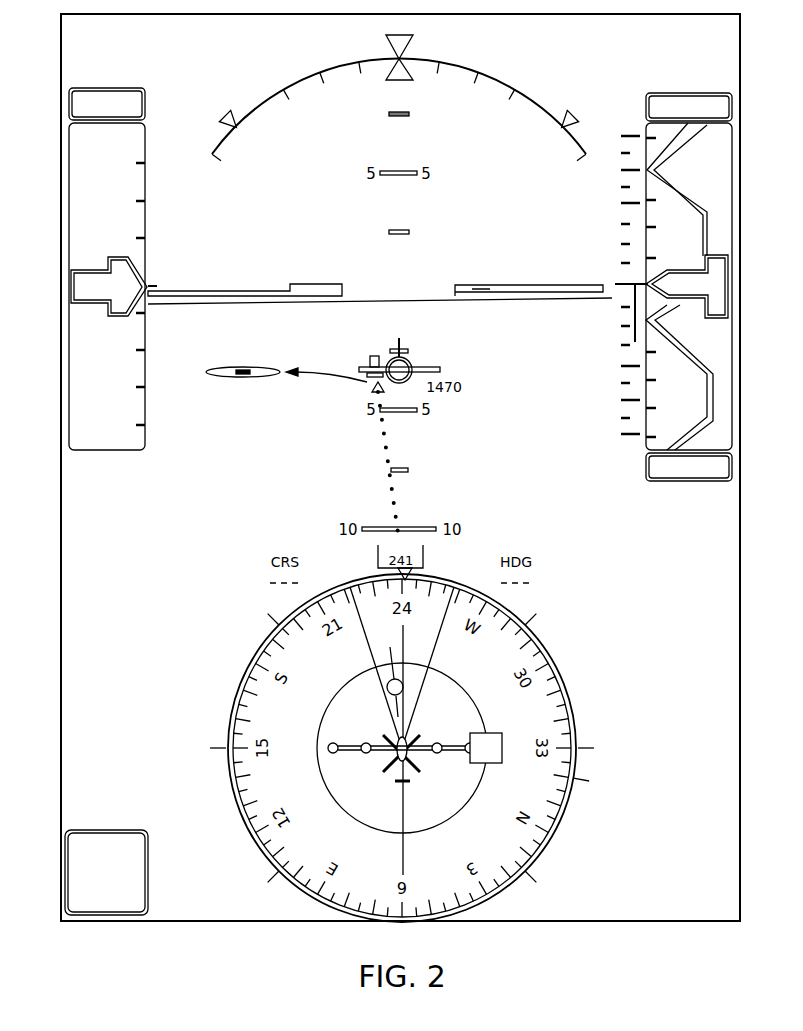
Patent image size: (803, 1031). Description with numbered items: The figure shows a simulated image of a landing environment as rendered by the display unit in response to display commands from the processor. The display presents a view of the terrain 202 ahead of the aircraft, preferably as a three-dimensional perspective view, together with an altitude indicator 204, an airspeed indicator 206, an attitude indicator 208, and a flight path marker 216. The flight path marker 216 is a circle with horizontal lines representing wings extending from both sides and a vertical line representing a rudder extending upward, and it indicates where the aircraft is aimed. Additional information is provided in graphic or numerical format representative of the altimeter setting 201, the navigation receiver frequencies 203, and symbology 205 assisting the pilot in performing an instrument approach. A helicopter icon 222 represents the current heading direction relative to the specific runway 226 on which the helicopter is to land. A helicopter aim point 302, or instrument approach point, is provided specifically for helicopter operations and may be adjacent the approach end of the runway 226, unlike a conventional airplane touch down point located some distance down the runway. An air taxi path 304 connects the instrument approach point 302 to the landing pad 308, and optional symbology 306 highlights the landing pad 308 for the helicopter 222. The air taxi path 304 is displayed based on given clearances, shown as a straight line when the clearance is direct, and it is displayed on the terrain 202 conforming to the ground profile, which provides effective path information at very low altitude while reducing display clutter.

The altimeter setting 201 is at (646, 468).
The terrain 202 is at (377, 303).
The navigation receiver frequencies 203 is at (148, 843).
The altitude indicator 204 is at (624, 206).
The symbology 205 is at (384, 461).
The airspeed indicator 206 is at (150, 214).
The attitude indicator 208 is at (530, 112).
The flight path marker 216 is at (447, 342).
The helicopter icon 222 is at (414, 742).
The runway 226 is at (373, 354).
The helicopter aim point 302 is at (372, 390).
The air taxi path 304 is at (326, 370).
The symbology 306 is at (242, 367).
The landing pad 308 is at (244, 377).